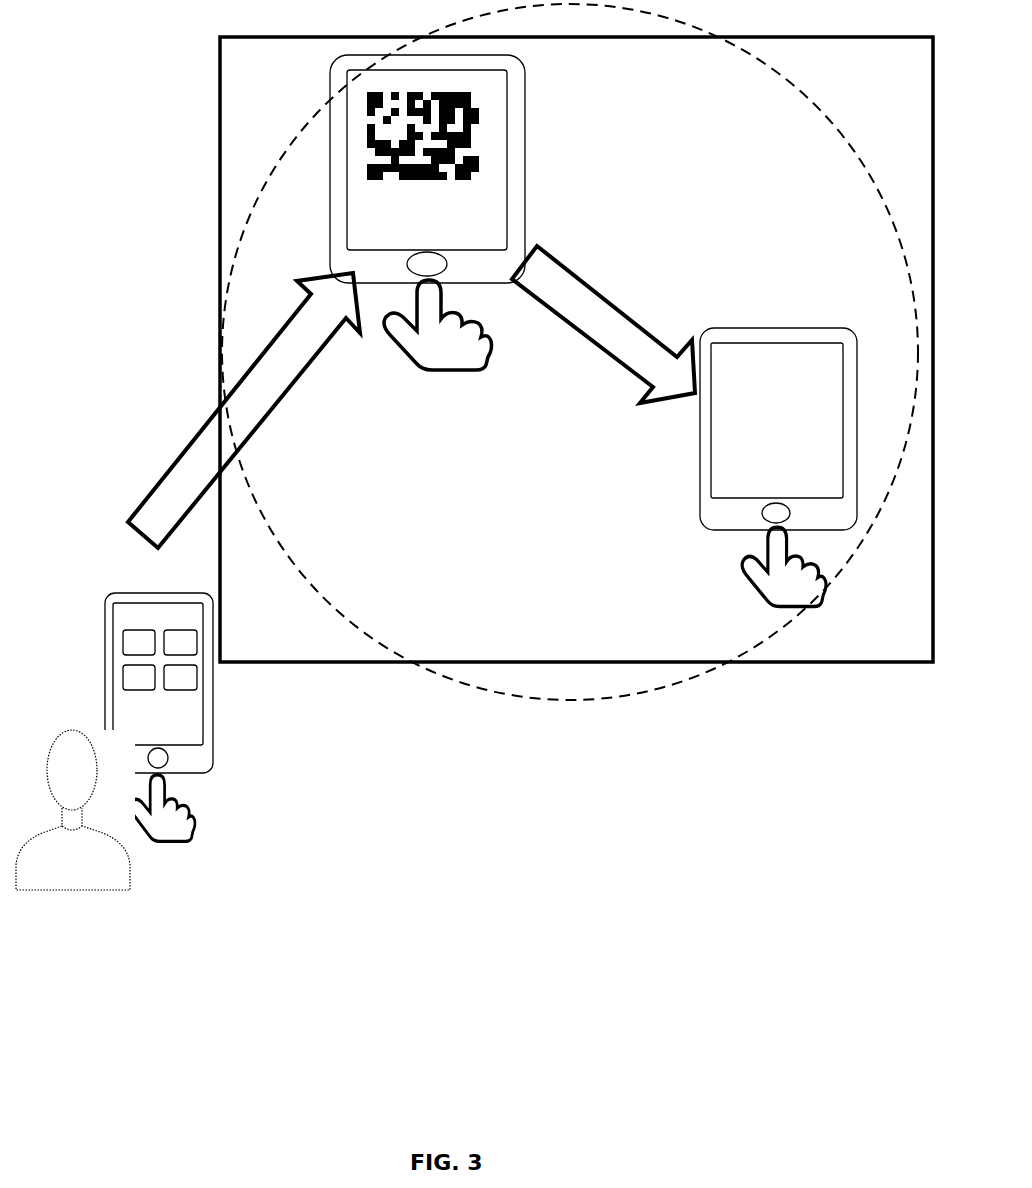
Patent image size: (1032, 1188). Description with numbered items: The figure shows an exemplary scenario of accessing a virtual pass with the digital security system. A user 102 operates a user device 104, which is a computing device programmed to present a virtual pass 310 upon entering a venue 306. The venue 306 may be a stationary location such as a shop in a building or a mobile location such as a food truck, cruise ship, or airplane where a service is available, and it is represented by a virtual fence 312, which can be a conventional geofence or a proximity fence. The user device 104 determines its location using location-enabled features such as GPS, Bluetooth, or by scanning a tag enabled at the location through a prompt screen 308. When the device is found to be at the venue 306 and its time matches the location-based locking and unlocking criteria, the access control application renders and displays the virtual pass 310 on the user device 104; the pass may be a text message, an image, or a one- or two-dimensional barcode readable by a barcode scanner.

The user 102 is at (75, 845).
The user device 104 is at (146, 700).
The venue 306 is at (576, 349).
The prompt screen 308 is at (530, 118).
The virtual pass 310 is at (820, 332).
The virtual fence 312 is at (650, 690).